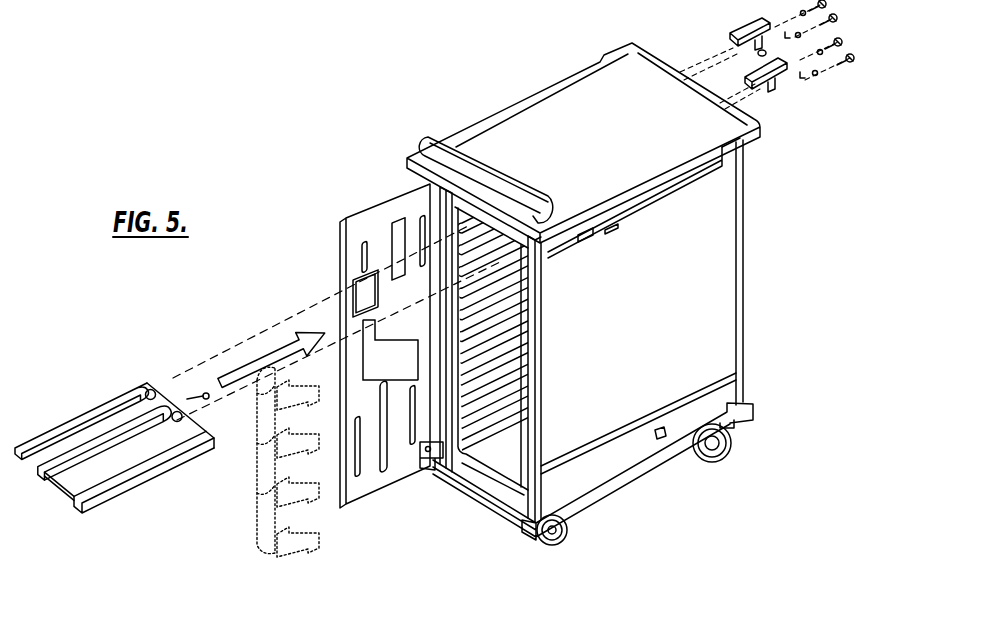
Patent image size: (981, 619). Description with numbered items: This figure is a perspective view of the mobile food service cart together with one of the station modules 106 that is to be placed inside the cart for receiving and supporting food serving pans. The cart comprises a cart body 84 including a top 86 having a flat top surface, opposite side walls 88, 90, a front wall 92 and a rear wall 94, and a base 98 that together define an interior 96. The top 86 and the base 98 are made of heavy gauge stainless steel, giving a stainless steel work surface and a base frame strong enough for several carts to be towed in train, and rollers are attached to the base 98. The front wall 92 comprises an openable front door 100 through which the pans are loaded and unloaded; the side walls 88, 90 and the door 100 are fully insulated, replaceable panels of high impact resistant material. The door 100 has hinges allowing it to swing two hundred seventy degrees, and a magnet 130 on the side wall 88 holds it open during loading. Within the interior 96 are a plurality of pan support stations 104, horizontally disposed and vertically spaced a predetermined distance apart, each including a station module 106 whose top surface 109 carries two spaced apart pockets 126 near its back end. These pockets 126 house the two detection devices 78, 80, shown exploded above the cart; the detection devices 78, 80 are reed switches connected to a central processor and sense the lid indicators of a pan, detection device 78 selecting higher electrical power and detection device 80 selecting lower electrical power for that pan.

The detection device 78 is at (747, 25).
The detection device 80 is at (777, 87).
The cart body 84 is at (544, 300).
The top 86 is at (543, 127).
The side wall 88 is at (703, 316).
The side wall 90 is at (437, 125).
The front wall 92 is at (410, 509).
The rear wall 94 is at (756, 256).
The interior 96 is at (482, 423).
The base 98 is at (583, 512).
The front door 100 is at (350, 205).
The pan support station 104 is at (478, 270).
The station module 106 is at (114, 404).
The top surface 109 is at (70, 423).
The pocket 126 is at (150, 392).
The magnet 130 is at (660, 441).